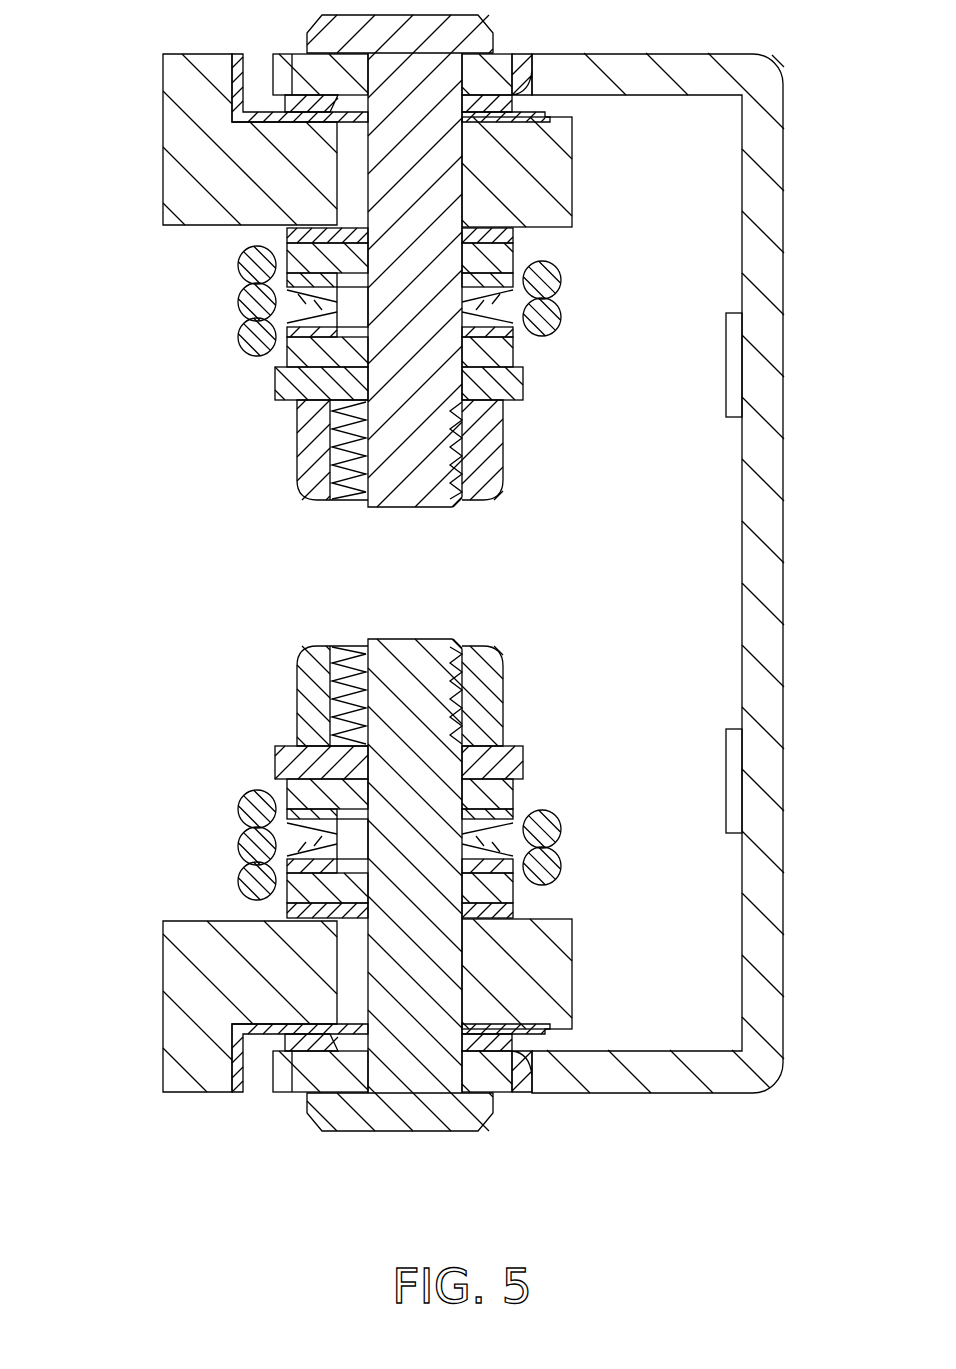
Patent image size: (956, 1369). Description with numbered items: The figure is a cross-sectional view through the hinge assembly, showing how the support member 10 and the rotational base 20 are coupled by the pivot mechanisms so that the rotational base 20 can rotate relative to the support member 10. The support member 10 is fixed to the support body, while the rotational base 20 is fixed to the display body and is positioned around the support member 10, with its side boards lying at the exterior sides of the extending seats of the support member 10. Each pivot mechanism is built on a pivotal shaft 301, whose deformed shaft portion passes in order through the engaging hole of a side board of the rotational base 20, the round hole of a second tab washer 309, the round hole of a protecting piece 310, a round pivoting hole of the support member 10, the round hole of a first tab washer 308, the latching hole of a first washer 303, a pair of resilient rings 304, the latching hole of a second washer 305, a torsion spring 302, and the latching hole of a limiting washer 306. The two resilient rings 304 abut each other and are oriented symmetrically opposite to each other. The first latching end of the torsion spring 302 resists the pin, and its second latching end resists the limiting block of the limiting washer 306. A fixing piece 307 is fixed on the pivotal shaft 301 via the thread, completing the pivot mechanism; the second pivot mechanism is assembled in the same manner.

The support member 10 is at (180, 1030).
The rotational base 20 is at (727, 1072).
The pivotal shaft 301 is at (407, 1115).
The torsion spring 302 is at (257, 805).
The first washer 303 is at (300, 883).
The resilient rings 304 is at (293, 866).
The second washer 305 is at (297, 796).
The limiting washer 306 is at (287, 757).
The fixing piece 307 is at (305, 686).
The first tab washer 308 is at (293, 913).
The second tab washer 309 is at (307, 1045).
The protecting piece 310 is at (265, 1032).